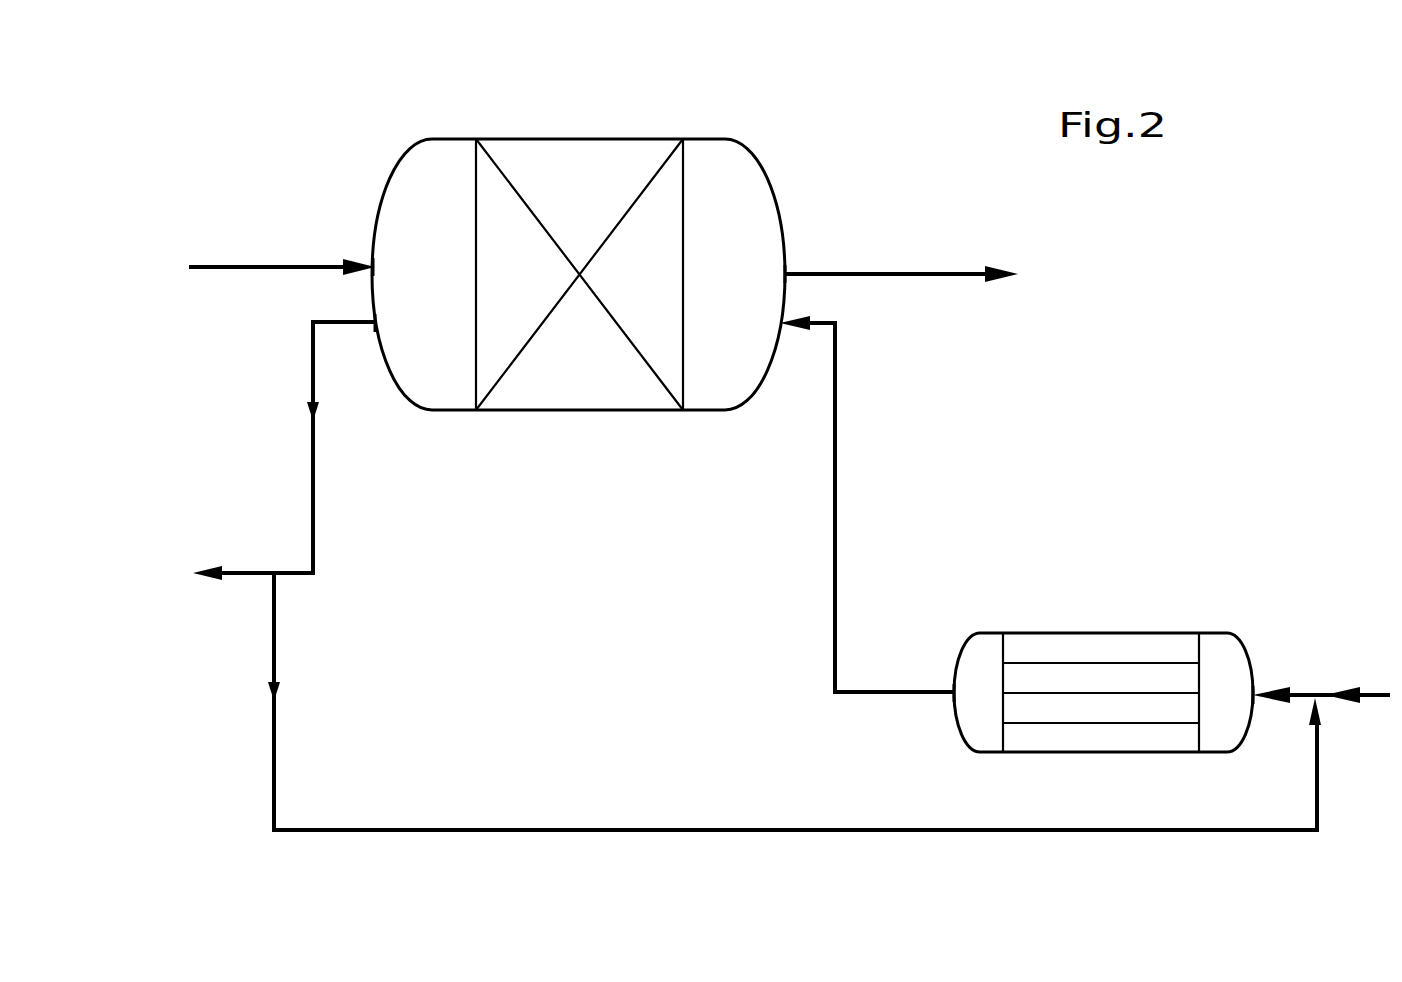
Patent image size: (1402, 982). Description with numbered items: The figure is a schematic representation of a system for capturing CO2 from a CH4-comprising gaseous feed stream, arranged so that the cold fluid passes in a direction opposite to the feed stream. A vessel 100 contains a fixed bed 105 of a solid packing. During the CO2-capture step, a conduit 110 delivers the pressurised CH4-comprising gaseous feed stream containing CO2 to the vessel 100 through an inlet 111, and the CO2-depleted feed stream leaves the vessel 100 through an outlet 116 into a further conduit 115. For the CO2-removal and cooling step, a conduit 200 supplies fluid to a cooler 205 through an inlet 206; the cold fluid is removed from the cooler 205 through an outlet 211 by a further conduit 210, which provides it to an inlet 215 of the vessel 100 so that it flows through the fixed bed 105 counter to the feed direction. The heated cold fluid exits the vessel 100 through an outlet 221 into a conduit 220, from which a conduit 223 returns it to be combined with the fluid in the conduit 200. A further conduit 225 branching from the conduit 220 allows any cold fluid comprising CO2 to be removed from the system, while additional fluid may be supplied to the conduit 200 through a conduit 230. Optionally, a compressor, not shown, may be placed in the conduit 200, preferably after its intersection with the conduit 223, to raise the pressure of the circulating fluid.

The vessel 100 is at (438, 138).
The fixed bed 105 is at (599, 174).
The conduit 110 is at (222, 263).
The inlet 111 is at (374, 263).
The further conduit 115 is at (934, 270).
The outlet 116 is at (790, 264).
The conduit 200 is at (1297, 692).
The cooler 205 is at (1079, 632).
The inlet 206 is at (1255, 692).
The further conduit 210 is at (834, 512).
The outlet 211 is at (951, 694).
The inlet 215 is at (783, 334).
The conduit 220 is at (315, 528).
The outlet 221 is at (377, 332).
The conduit 223 is at (473, 827).
The further conduit 225 is at (240, 569).
The conduit 230 is at (1375, 700).